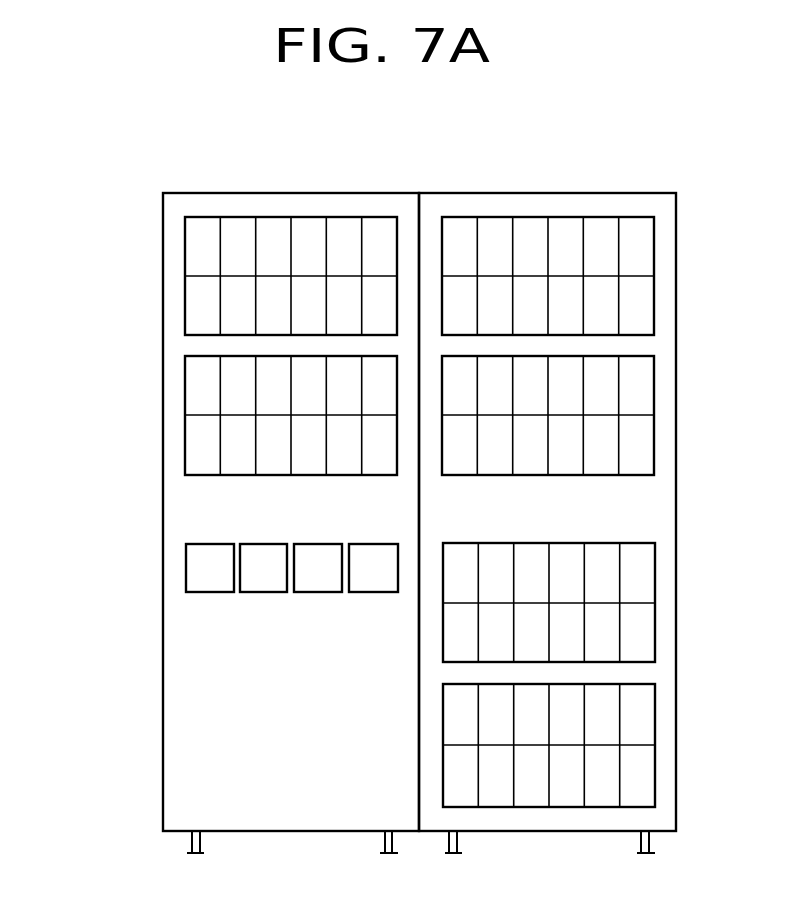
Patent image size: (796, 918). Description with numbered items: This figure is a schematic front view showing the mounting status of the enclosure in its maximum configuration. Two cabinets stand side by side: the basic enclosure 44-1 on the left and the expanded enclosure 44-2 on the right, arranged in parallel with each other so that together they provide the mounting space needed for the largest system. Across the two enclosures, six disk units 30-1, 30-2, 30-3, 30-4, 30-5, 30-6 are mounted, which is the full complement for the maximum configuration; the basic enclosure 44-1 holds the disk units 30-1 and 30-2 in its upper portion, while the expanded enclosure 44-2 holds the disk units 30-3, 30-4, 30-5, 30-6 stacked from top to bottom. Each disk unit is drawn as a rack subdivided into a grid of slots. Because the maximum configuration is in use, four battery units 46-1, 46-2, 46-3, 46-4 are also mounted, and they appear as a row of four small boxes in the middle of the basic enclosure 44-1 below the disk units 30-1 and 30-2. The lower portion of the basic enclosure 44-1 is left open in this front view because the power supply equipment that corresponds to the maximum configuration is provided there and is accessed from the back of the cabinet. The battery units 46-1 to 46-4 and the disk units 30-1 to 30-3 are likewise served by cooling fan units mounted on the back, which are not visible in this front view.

The basic enclosure 44-1 is at (238, 184).
The expanded enclosure 44-2 is at (523, 143).
The disk unit 30-1 is at (176, 384).
The disk unit 30-2 is at (176, 246).
The disk unit 30-3 is at (768, 706).
The disk unit 30-4 is at (768, 566).
The disk unit 30-5 is at (768, 378).
The disk unit 30-6 is at (768, 237).
The battery unit 46-1 is at (373, 592).
The battery unit 46-2 is at (322, 592).
The battery unit 46-3 is at (262, 592).
The battery unit 46-4 is at (210, 592).